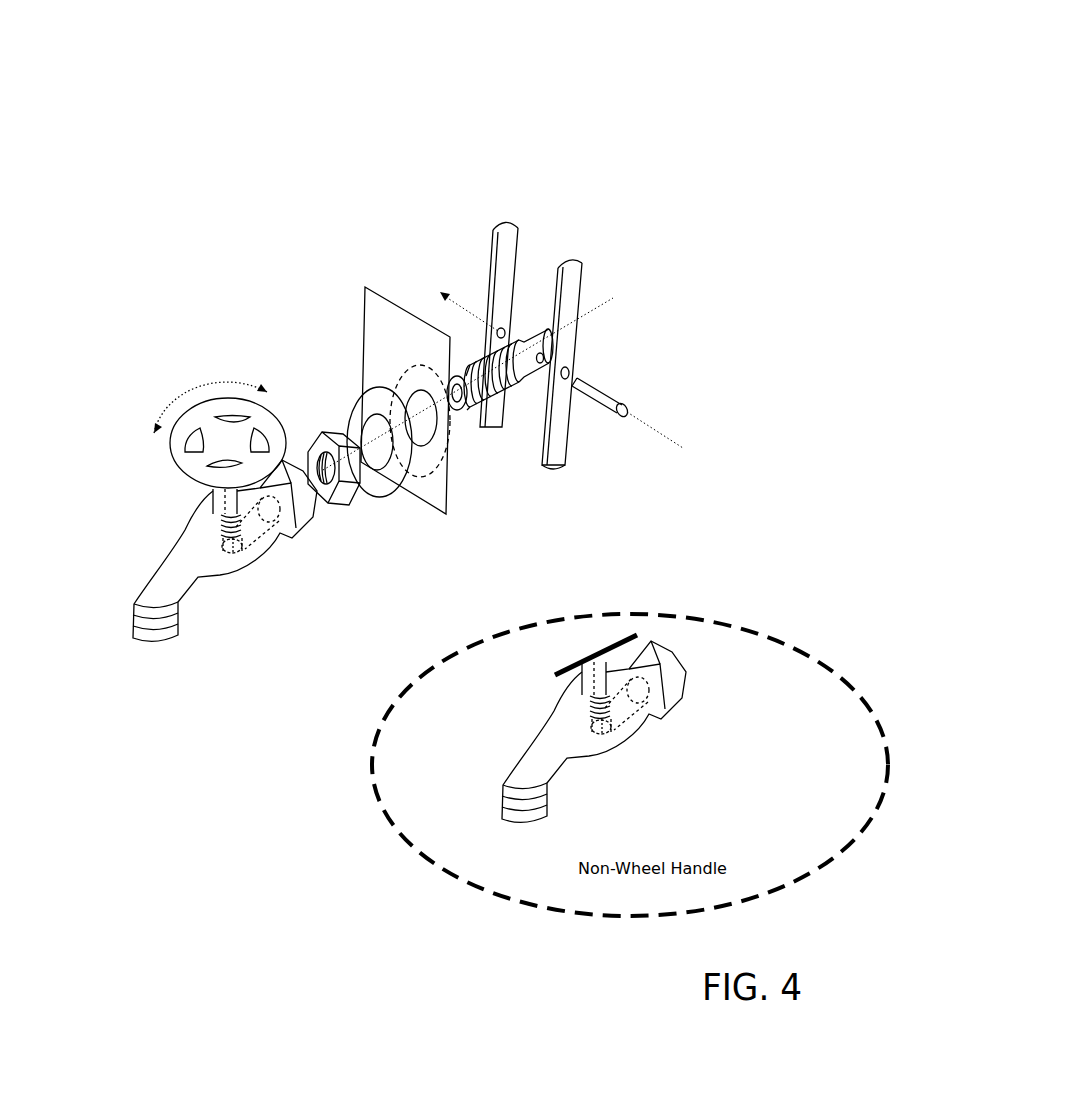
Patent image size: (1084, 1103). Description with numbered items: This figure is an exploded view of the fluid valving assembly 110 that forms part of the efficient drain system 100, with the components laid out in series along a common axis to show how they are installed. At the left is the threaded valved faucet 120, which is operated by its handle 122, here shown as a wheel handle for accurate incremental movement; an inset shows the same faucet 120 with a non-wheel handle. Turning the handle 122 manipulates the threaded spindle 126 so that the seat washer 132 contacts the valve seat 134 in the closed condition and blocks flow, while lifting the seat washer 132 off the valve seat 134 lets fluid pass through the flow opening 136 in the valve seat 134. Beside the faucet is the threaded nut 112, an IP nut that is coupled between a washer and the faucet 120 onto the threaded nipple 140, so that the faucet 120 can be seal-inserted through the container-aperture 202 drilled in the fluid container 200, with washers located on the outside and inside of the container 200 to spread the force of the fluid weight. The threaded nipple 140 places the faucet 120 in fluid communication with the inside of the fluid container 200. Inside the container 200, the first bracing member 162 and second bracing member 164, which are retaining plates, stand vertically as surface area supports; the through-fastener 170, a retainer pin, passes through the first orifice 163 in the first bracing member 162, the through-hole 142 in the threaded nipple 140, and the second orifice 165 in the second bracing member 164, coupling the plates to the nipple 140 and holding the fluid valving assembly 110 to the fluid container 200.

The efficient drain system 100 is at (660, 87).
The fluid valving assembly 110 is at (671, 135).
The threaded nut 112 is at (324, 428).
The threaded valved faucet 120 is at (205, 562).
The handle 122 is at (180, 476).
The threaded spindle 126 is at (222, 513).
The seat washer 132 is at (230, 540).
The valve seat 134 is at (242, 545).
The flow opening 136 is at (240, 551).
The threaded nipple 140 is at (537, 316).
The through-hole 142 is at (530, 372).
The first bracing member 162 is at (585, 278).
The first orifice 163 is at (568, 368).
The second bracing member 164 is at (508, 225).
The second orifice 165 is at (498, 328).
The through-fastener 170 is at (618, 396).
The fluid container 200 is at (397, 344).
The container-aperture 202 is at (440, 443).